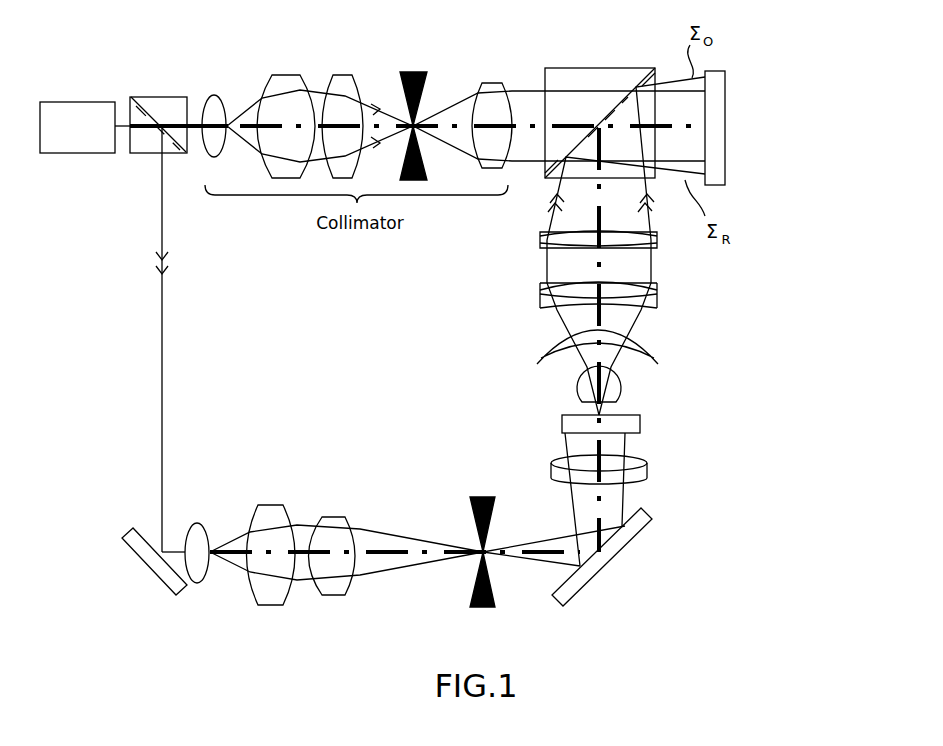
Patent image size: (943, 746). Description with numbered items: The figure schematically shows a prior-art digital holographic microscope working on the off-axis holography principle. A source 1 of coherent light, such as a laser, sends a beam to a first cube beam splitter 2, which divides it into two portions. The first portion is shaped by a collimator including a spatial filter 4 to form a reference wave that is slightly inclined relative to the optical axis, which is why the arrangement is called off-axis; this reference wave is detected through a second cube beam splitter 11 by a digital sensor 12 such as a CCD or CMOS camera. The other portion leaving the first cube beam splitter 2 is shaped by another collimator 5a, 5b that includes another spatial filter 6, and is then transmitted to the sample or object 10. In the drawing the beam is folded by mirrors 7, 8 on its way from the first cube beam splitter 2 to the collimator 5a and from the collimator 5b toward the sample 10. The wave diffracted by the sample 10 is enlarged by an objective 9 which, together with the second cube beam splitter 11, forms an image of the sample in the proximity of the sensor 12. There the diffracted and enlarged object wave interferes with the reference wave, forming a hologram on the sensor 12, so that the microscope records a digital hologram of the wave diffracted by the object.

The source of coherent light 1 is at (75, 101).
The first cube beam splitter 2 is at (178, 157).
The spatial filter 4 is at (430, 90).
The collimator 5a is at (192, 613).
The collimator 5b is at (647, 478).
The spatial filter 6 is at (480, 498).
The mirror 7 is at (123, 548).
The mirror 8 is at (650, 517).
The objective 9 is at (533, 403).
The sample or object 10 is at (640, 427).
The second cube beam splitter 11 is at (640, 70).
The digital sensor 12 is at (727, 107).